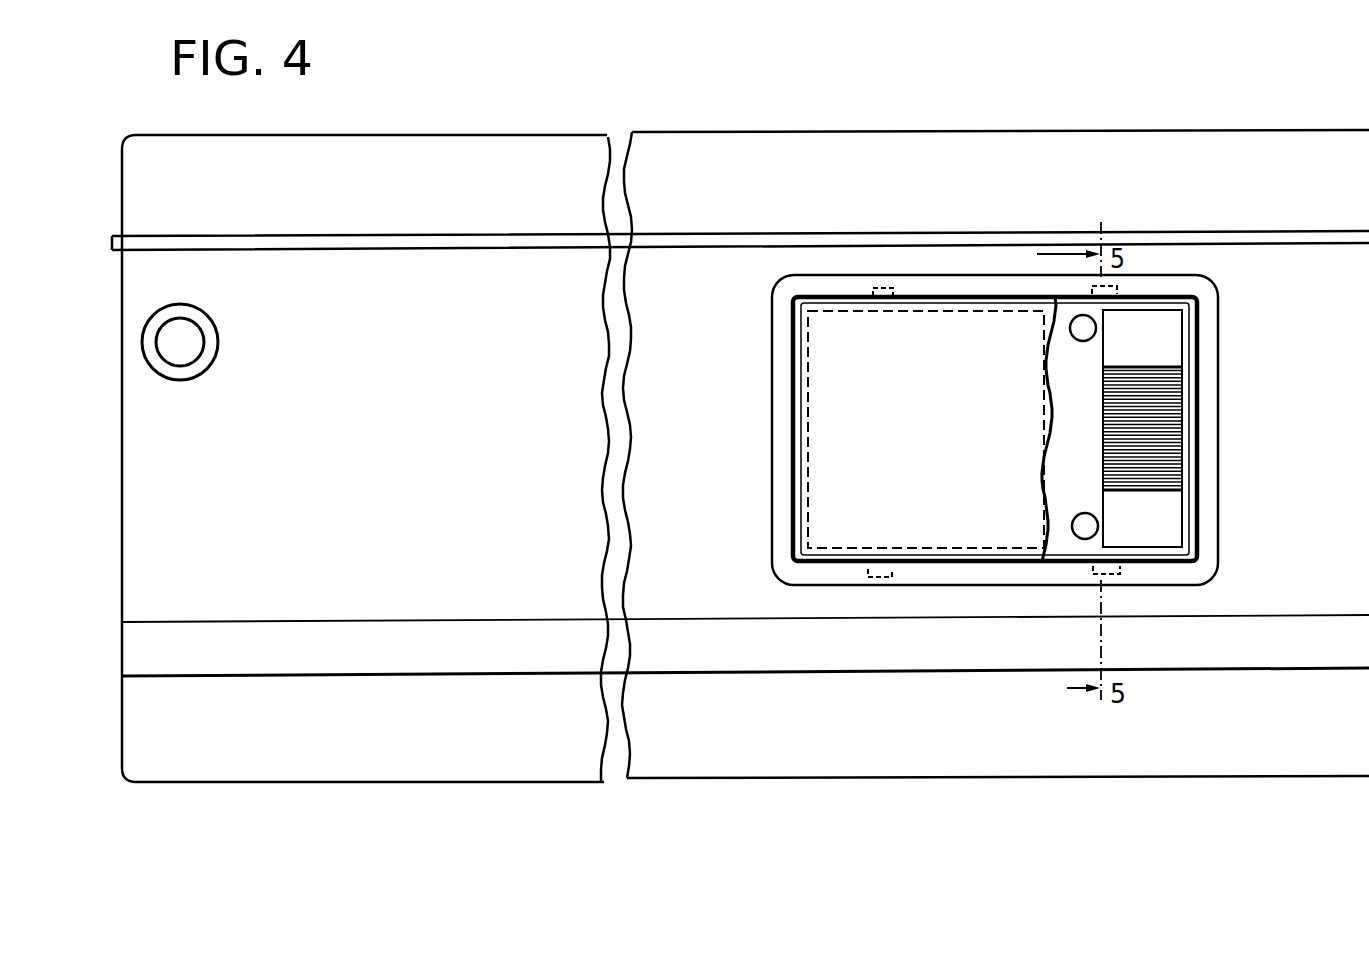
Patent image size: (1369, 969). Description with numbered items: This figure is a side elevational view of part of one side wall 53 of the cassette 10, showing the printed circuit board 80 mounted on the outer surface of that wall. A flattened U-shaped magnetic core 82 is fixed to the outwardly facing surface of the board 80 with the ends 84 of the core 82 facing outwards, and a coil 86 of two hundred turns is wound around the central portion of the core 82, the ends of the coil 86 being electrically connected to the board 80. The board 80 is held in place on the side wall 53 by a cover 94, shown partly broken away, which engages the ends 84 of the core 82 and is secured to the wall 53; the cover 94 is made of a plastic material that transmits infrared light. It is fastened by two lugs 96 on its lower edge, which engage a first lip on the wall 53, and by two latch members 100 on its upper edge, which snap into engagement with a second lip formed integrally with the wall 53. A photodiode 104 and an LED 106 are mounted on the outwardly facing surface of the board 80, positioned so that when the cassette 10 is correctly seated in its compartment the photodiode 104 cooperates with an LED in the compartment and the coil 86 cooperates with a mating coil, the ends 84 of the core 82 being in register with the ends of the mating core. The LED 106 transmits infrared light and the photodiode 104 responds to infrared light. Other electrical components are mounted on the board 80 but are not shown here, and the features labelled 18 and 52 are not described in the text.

The cassette 10 is at (1000, 128).
The lower panel strip 18 is at (405, 650).
The control knob 52 is at (185, 340).
The side wall 53 is at (221, 595).
The printed circuit board 80 is at (1078, 362).
The magnetic core 82 is at (1098, 497).
The ends of the core 84 is at (1160, 353).
The coil 86 is at (1103, 421).
The cover 94 is at (1023, 330).
The lugs 96 is at (878, 578).
The latch members 100 is at (883, 282).
The photodiode 104 is at (1085, 526).
The LED 106 is at (1083, 328).